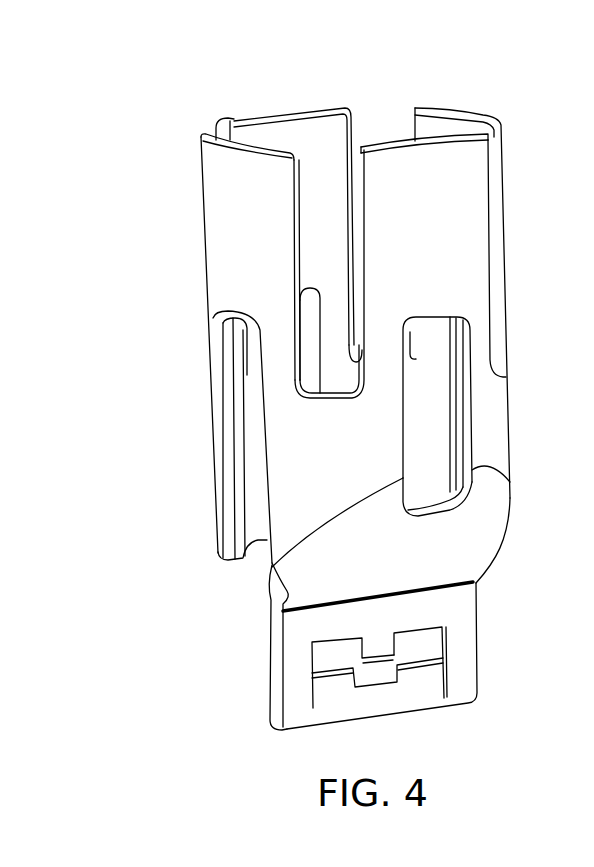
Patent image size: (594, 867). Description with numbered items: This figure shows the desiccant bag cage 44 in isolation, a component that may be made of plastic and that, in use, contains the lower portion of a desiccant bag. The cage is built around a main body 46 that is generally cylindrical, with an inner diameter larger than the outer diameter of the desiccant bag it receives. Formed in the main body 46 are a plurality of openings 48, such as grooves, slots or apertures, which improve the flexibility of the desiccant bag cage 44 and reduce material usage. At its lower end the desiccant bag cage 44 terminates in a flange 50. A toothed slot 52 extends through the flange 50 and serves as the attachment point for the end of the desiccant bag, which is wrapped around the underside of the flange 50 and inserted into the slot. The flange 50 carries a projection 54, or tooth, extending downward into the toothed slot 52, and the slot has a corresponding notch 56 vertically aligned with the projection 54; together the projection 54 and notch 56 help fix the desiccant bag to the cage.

The desiccant bag cage 44 is at (367, 407).
The main body 46 is at (215, 223).
The openings 48 is at (381, 110).
The flange 50 is at (467, 620).
The toothed slot 52 is at (325, 657).
The projection 54 is at (383, 646).
The notch 56 is at (378, 686).